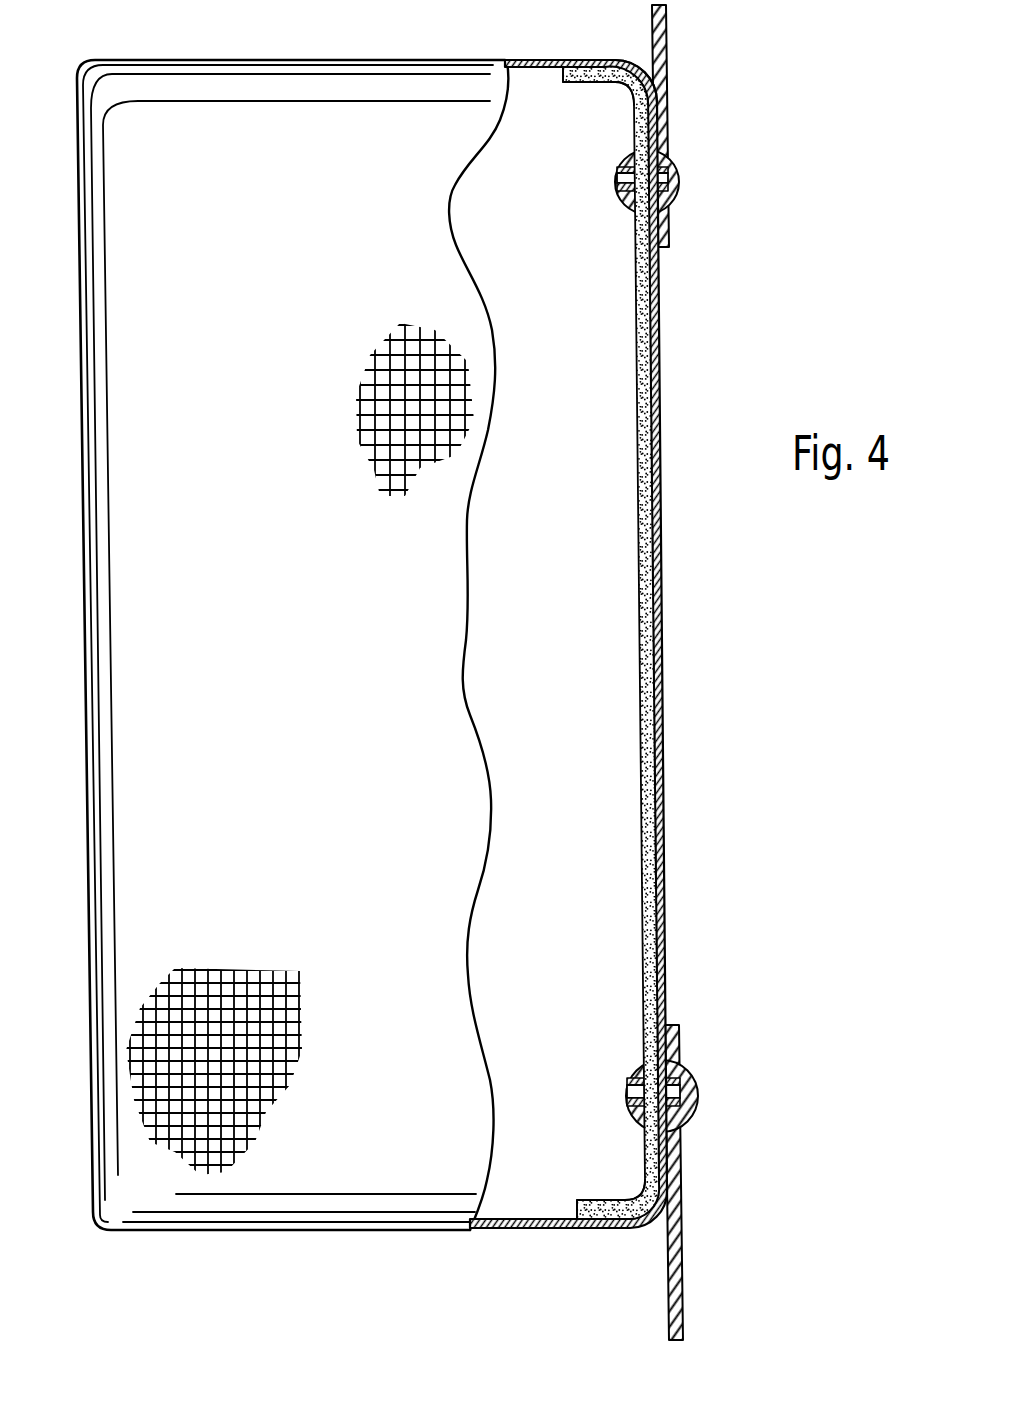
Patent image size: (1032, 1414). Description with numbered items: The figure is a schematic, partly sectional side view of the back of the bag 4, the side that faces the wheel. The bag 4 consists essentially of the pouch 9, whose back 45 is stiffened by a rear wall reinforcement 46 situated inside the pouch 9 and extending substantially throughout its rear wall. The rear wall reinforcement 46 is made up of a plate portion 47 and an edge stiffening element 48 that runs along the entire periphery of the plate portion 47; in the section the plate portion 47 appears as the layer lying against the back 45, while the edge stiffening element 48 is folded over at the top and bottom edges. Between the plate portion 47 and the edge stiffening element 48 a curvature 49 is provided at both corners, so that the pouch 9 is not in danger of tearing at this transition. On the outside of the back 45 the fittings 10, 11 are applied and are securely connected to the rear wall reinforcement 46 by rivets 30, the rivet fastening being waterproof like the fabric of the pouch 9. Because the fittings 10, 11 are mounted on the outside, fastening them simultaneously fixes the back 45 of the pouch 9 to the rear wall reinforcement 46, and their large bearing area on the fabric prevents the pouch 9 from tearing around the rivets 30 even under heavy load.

The bag 4 is at (340, 1243).
The pouch 9 is at (312, 785).
The fitting 10 is at (667, 47).
The fitting 11 is at (680, 1025).
The rivets 30 is at (678, 170).
The back 45 is at (658, 588).
The rear wall reinforcement 46 is at (615, 615).
The plate portion 47 is at (641, 604).
The edge stiffening element 48 is at (590, 61).
The curvature 49 is at (616, 94).